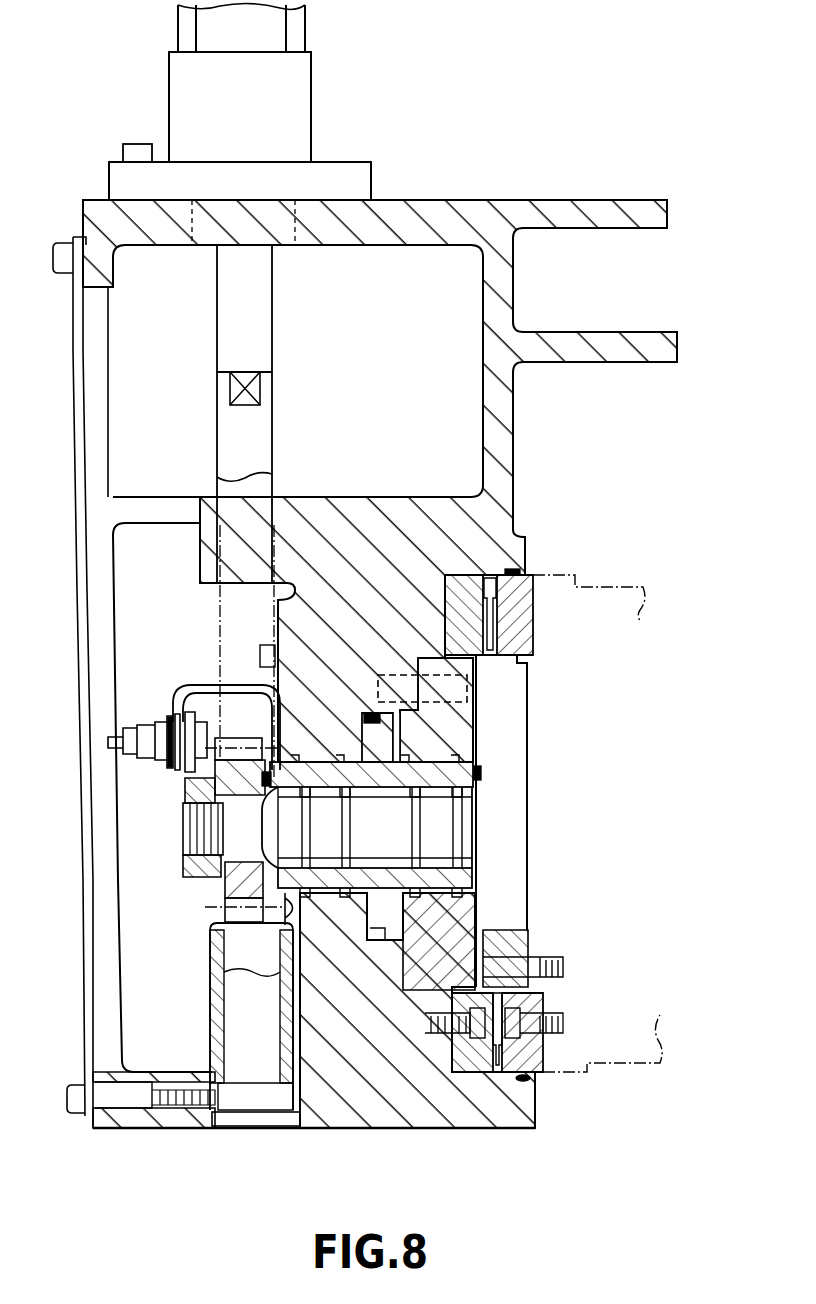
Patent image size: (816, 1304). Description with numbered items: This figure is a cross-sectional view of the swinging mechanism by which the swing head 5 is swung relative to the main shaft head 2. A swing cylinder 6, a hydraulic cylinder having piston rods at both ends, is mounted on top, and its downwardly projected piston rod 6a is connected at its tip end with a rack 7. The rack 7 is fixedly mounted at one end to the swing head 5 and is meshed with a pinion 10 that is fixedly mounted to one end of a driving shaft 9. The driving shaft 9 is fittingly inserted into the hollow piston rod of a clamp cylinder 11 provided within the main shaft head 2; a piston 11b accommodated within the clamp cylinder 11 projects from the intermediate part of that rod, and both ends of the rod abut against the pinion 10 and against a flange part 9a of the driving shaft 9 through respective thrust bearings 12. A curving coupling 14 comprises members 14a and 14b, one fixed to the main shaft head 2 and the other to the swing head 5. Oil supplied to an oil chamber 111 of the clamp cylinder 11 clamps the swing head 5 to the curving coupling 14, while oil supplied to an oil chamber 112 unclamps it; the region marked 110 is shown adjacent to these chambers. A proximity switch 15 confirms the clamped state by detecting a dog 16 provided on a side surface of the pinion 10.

The main shaft head 2 is at (500, 443).
The swing head 5 is at (605, 607).
The swing cylinder 6 is at (300, 127).
The piston rod 6a is at (272, 327).
The rack 7 is at (247, 1018).
The driving shaft 9 is at (290, 847).
The flange part 9a is at (527, 720).
The pinion 10 is at (232, 888).
The clamp cylinder 11 is at (398, 700).
The piston 11b is at (370, 707).
The thrust bearings 12 is at (273, 752).
The curving coupling 14 is at (566, 1160).
The curving coupling member 14a is at (472, 1077).
The curving coupling member 14b is at (528, 1073).
The proximity switch 15 is at (188, 713).
The dog 16 is at (195, 705).
The top plate 110 is at (323, 773).
The oil chamber 111 is at (400, 727).
The oil chamber 112 is at (362, 720).